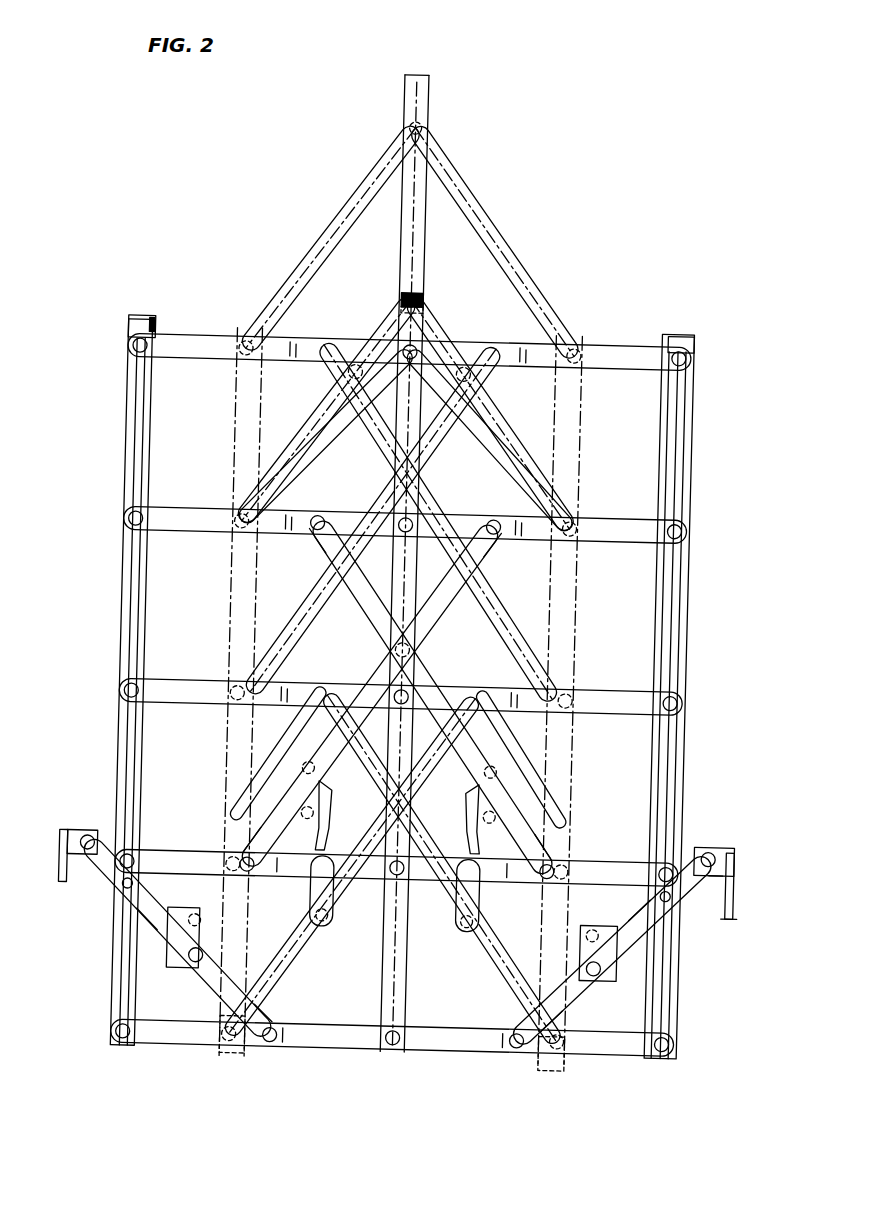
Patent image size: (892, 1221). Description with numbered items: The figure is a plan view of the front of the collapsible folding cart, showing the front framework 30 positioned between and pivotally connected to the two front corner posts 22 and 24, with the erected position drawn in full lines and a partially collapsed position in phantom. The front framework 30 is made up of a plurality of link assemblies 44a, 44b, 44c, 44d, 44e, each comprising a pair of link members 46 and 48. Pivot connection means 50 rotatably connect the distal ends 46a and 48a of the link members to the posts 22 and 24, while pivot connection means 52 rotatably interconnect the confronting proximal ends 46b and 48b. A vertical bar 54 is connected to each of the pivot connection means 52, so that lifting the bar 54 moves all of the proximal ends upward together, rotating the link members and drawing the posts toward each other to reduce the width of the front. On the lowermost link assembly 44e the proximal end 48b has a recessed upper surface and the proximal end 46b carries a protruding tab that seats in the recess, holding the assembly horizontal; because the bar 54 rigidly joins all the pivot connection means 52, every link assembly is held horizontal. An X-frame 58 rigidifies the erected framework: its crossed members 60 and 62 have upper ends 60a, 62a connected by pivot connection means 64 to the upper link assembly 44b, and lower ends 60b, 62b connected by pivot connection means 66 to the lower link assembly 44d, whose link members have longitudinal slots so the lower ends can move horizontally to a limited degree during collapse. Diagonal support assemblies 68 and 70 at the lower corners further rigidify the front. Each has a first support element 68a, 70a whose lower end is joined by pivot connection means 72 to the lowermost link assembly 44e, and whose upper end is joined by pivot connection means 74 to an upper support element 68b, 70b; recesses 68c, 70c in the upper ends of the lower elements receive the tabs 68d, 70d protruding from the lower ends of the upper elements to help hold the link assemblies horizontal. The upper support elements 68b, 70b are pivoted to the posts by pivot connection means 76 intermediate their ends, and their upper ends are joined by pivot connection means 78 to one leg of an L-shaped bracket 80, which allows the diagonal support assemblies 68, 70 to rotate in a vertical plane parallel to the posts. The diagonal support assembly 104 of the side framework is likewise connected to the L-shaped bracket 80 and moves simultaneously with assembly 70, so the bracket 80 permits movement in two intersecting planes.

The front corner post 22 is at (675, 480).
The front corner post 24 is at (125, 437).
The front framework 30 is at (578, 97).
The link assembly 44a is at (626, 343).
The link assembly 44b is at (610, 521).
The link assembly 44c is at (596, 698).
The link assembly 44d is at (594, 871).
The link assembly 44e is at (614, 1061).
The link member 46 is at (330, 240).
The distal end of link member 46a is at (148, 322).
The proximal end of link member 46b is at (398, 350).
The link member 48 is at (497, 242).
The distal end of link member 48a is at (680, 345).
The proximal end of link member 48b is at (432, 345).
The pivot connection means 50 is at (132, 349).
The pivot connection means 52 is at (350, 374).
The bar 54 is at (397, 966).
The X-frame 58 is at (373, 650).
The crossed member 60 is at (372, 590).
The upper end of crossed member 60a is at (318, 548).
The lower end of crossed member 60b is at (565, 832).
The crossed member 62 is at (447, 598).
The upper end of crossed member 62a is at (484, 553).
The lower end of crossed member 62b is at (248, 850).
The pivot connection means 64 is at (323, 516).
The pivot connection means 66 is at (250, 868).
The diagonal support assembly 68 is at (110, 881).
The first support element 68a is at (272, 1013).
The upper support element 68b is at (150, 936).
The recess 68c is at (332, 832).
The left cam link 68d is at (348, 788).
The diagonal support assembly 70 is at (689, 903).
The first support element 70a is at (562, 1010).
The upper support element 70b is at (640, 918).
The recess 70c is at (468, 832).
The right cam link 70d is at (462, 790).
The pivot connection means 72 is at (293, 1046).
The pivot connection means 74 is at (197, 966).
The pivot connection means 76 is at (135, 878).
The pivot connection means 78 is at (92, 835).
The L-shaped bracket 80 is at (70, 862).
The diagonal support assembly 104 is at (738, 902).